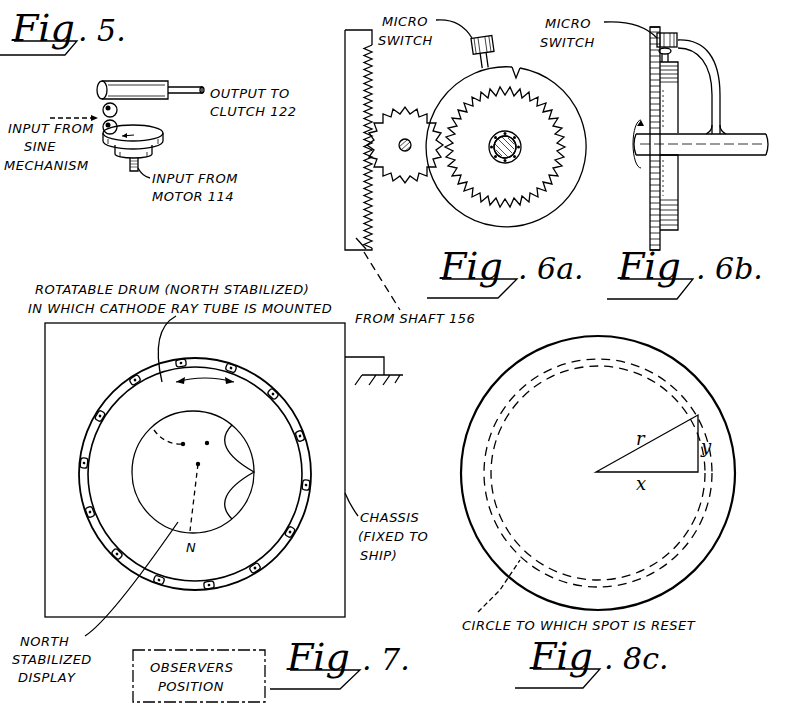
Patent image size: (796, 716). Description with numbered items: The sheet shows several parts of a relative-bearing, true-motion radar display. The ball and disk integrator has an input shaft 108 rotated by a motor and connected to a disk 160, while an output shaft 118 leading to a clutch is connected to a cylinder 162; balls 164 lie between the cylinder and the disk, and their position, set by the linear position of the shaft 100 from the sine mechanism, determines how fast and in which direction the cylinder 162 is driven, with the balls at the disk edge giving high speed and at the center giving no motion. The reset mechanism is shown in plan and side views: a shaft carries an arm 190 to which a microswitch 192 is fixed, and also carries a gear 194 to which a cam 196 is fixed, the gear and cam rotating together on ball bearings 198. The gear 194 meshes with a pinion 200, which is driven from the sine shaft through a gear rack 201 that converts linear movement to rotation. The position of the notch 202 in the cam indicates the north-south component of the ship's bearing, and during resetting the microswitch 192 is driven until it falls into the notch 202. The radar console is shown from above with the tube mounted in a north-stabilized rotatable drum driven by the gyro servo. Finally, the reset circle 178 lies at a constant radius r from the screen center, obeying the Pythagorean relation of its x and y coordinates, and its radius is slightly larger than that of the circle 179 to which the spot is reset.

In FIG. 5, the shaft from the sine mechanism 100 is at (58, 113).
In FIG. 5, the cylinder 162 is at (150, 75).
In FIG. 5, the output shaft 118 is at (186, 86).
In FIG. 6A, the output shaft 118 is at (512, 160).
In FIG. 6B, the output shaft 118 is at (738, 157).
In FIG. 5, the balls 164 is at (118, 110).
In FIG. 5, the disk 160 is at (158, 131).
In FIG. 5, the input shaft 108 is at (128, 165).
In FIG. 6A, the gear rack 201 is at (345, 36).
In FIG. 6B, the gear rack 201 is at (650, 240).
In FIG. 6A, the pinion 200 is at (402, 108).
In FIG. 6A, the cam 196 is at (550, 81).
In FIG. 6B, the cam 196 is at (678, 200).
In FIG. 6A, the notch 202 is at (516, 66).
In FIG. 6A, the gear 194 is at (556, 120).
In FIG. 6B, the gear 194 is at (650, 186).
In FIG. 6A, the ball bearings 198 is at (500, 133).
In FIG. 6A, the microswitch 192 is at (490, 38).
In FIG. 6B, the microswitch 192 is at (677, 40).
In FIG. 6B, the arm 190 is at (720, 68).
In FIG. 8C, the reset circle 178 is at (633, 365).
In FIG. 8C, the circle to which the spot is reset 179 is at (700, 510).